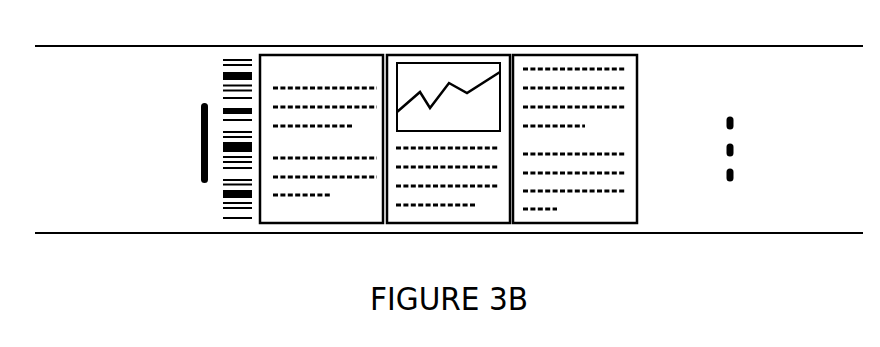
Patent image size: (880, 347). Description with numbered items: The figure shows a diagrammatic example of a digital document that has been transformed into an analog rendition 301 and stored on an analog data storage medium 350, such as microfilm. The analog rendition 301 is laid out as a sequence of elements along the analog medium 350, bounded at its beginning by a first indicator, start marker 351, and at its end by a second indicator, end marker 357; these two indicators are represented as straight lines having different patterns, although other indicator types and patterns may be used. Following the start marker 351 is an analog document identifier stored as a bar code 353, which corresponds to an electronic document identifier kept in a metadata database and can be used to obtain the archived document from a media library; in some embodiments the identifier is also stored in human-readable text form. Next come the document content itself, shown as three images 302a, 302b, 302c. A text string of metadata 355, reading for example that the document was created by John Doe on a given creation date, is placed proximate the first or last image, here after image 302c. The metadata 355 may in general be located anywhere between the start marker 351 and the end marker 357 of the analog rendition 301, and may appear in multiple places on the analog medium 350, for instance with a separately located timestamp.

The analog rendition 301 is at (93, 270).
The image 302a is at (298, 38).
The image 302b is at (428, 38).
The image 302c is at (560, 38).
The analog data storage medium 350 is at (448, 147).
The start marker 351 is at (205, 248).
The bar code 353 is at (247, 240).
The metadata 355 is at (672, 240).
The end marker 357 is at (732, 240).